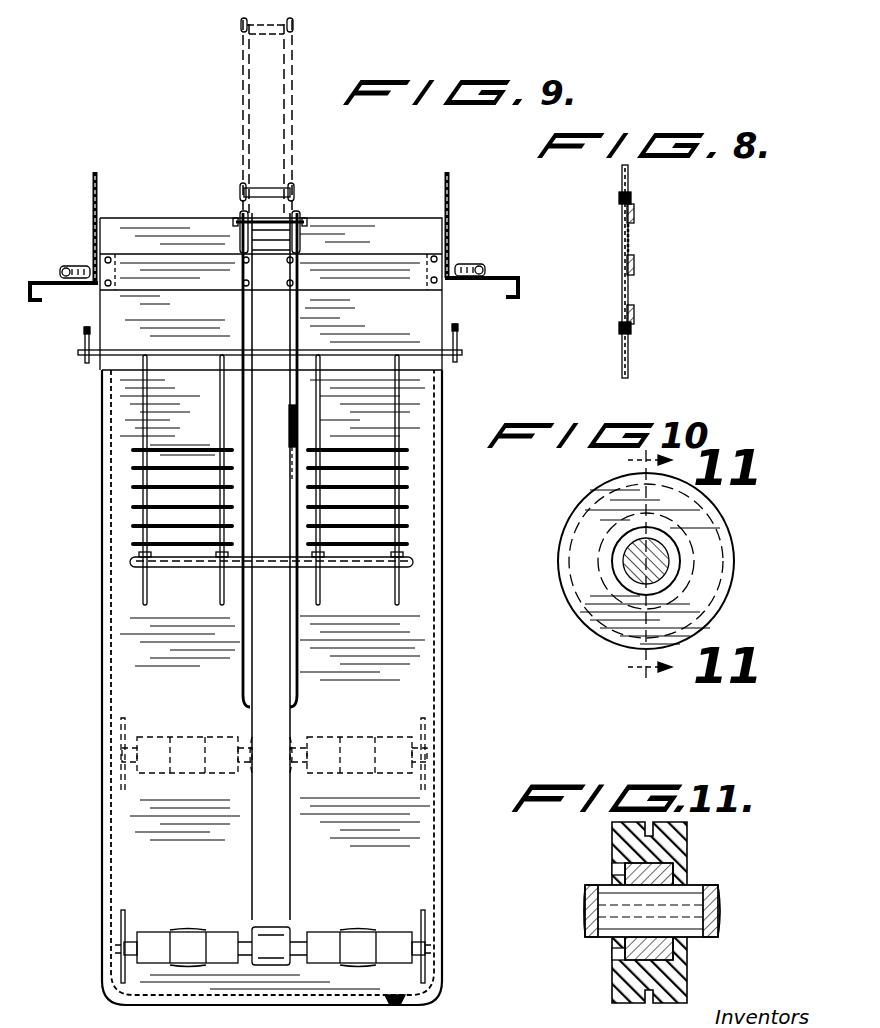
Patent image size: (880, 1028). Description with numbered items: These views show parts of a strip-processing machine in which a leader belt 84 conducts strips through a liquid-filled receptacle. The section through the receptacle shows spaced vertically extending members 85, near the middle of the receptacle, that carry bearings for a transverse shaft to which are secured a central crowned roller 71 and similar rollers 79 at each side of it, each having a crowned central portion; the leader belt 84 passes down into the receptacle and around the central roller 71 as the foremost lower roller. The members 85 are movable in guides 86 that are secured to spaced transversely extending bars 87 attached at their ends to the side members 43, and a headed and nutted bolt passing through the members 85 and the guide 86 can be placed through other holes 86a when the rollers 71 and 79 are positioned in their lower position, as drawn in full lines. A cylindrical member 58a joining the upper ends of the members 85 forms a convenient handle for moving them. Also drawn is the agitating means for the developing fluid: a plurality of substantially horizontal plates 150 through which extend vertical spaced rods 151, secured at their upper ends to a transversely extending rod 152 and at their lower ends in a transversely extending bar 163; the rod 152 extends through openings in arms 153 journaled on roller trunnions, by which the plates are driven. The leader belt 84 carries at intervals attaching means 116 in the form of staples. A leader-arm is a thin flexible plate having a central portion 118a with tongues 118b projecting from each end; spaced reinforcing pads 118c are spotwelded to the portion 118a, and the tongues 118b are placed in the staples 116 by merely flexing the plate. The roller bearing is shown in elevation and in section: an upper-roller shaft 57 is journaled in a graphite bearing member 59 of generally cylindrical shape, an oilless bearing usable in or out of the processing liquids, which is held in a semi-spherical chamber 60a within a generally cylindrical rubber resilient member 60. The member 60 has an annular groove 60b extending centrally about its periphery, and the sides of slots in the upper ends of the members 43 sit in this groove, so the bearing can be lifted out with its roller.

In FIG. 9, the member 43 is at (93, 210).
In FIG. 11, the shaft 57 is at (693, 897).
In FIG. 9, the rod cap 58a is at (262, 188).
In FIG. 10, the bearing member 59 is at (670, 560).
In FIG. 11, the bearing member 59 is at (665, 950).
In FIG. 10, the resilient member 60 is at (582, 582).
In FIG. 11, the resilient member 60 is at (614, 852).
In FIG. 11, the semi-spherical chamber 60a is at (615, 945).
In FIG. 10, the annular groove 60b is at (732, 590).
In FIG. 11, the annular groove 60b is at (645, 1005).
In FIG. 9, the central crowned roller 71 is at (270, 935).
In FIG. 9, the roller 79 is at (160, 932).
In FIG. 8, the leader belt 84 is at (624, 240).
In FIG. 9, the vertically extending member 85 is at (242, 108).
In FIG. 9, the guide 86 is at (300, 222).
In FIG. 9, the hole 86a is at (289, 425).
In FIG. 9, the transversely extending bar 87 is at (178, 284).
In FIG. 8, the attaching means 116 is at (620, 198).
In FIG. 8, the central portion 118a is at (629, 240).
In FIG. 8, the tongue 118b is at (634, 214).
In FIG. 8, the reinforcing pad 118c is at (634, 265).
In FIG. 9, the plate 150 is at (202, 466).
In FIG. 9, the rod 151 is at (148, 405).
In FIG. 9, the transversely extending rod 152 is at (345, 350).
In FIG. 9, the arm 153 is at (87, 332).
In FIG. 9, the transversely extending bar 163 is at (340, 566).